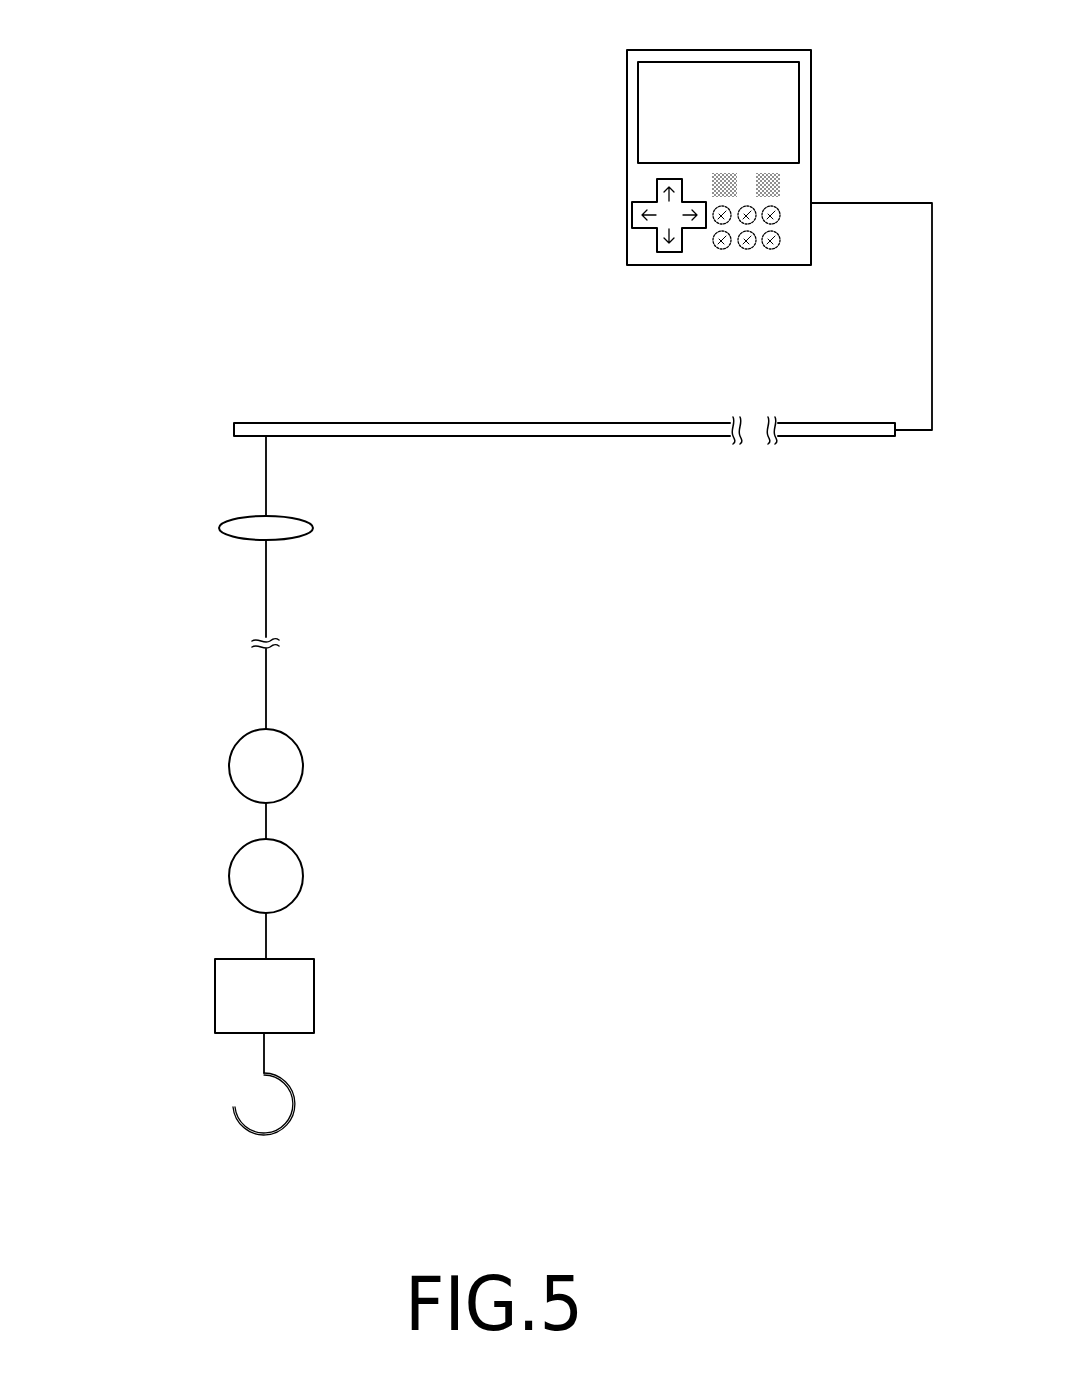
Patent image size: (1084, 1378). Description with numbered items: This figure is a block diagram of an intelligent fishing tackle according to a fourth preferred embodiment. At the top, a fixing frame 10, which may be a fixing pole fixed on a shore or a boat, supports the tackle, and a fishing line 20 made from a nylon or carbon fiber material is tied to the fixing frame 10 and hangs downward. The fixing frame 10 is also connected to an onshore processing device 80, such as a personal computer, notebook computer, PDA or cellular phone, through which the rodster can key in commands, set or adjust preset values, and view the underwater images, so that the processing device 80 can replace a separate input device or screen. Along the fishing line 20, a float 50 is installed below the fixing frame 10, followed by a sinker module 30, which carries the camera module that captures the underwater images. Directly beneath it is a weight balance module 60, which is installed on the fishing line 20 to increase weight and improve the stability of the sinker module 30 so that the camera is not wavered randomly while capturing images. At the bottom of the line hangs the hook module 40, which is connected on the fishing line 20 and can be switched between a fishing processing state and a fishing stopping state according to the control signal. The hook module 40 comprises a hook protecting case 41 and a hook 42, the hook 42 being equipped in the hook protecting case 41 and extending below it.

The onshore processing device 80 is at (800, 57).
The fixing frame 10 is at (583, 430).
The fishing line 20 is at (266, 570).
The float 50 is at (236, 527).
The sinker module 30 is at (242, 752).
The weight balance module 60 is at (242, 862).
The hook module 40 is at (233, 1032).
The hook protecting case 41 is at (295, 1008).
The hook 42 is at (287, 1088).